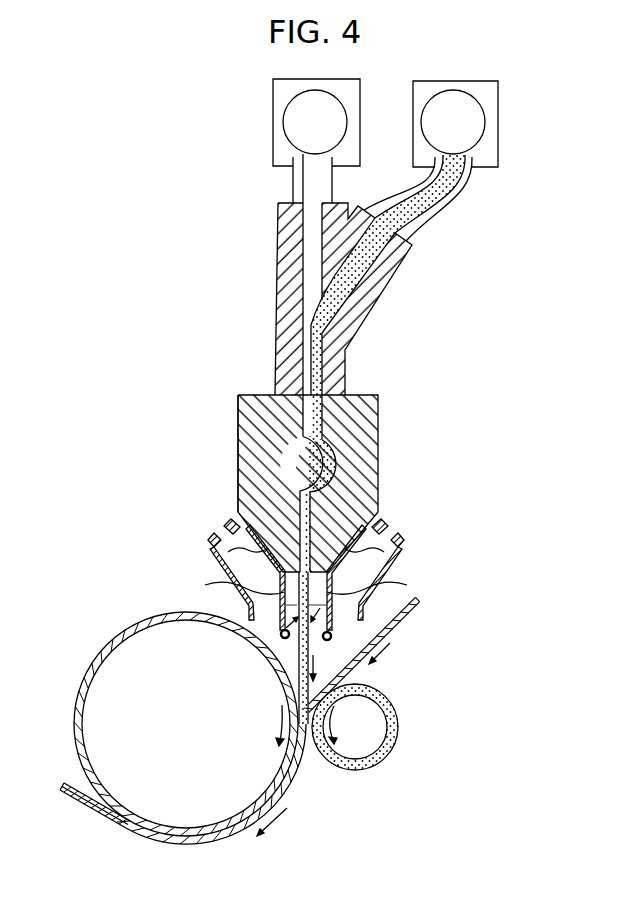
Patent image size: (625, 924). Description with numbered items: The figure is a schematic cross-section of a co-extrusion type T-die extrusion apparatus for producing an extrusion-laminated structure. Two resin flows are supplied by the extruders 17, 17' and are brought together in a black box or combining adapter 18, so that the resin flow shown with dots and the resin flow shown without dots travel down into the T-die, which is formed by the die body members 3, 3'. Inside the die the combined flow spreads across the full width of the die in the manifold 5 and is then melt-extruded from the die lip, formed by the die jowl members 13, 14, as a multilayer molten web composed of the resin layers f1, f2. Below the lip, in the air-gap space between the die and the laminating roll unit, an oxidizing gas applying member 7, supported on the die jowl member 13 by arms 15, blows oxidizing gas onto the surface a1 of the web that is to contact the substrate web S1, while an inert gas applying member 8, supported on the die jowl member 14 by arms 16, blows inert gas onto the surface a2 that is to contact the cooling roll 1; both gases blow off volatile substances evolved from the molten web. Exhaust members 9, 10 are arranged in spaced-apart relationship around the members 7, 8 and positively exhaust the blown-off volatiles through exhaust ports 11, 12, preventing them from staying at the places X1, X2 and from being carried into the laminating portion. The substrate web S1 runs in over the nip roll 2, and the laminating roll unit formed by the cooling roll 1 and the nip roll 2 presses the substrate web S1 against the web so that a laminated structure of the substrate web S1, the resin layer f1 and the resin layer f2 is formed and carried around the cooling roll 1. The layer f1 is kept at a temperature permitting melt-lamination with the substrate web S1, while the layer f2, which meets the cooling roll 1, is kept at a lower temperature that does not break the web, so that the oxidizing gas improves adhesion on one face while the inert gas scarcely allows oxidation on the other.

The cooling roll 1 is at (117, 640).
The nip roll 2 is at (399, 716).
The die body member 3 is at (325, 483).
The die body member 3' is at (219, 453).
The manifold 5 is at (316, 476).
The oxidizing gas applying member 7 is at (329, 638).
The inert gas applying member 8 is at (284, 648).
The exhaust member 9 is at (398, 562).
The exhaust member 10 is at (212, 563).
The exhaust port 11 is at (383, 520).
The exhaust port 12 is at (229, 520).
The die jowl member 13 is at (397, 545).
The die jowl member 14 is at (209, 537).
The arm 15 is at (334, 600).
The arm 16 is at (243, 589).
The extruder 17 is at (479, 124).
The extruder 17' is at (296, 120).
The combining adapter 18 is at (376, 288).
The substrate web S1 is at (407, 624).
The place of volatile substance staying X1 is at (333, 612).
The place of volatile substance staying X2 is at (278, 608).
The web surface contacting the substrate web a1 is at (321, 618).
The web surface contacting the cooling roll a2 is at (280, 630).
The resin layer f1 is at (338, 583).
The resin layer f2 is at (281, 584).